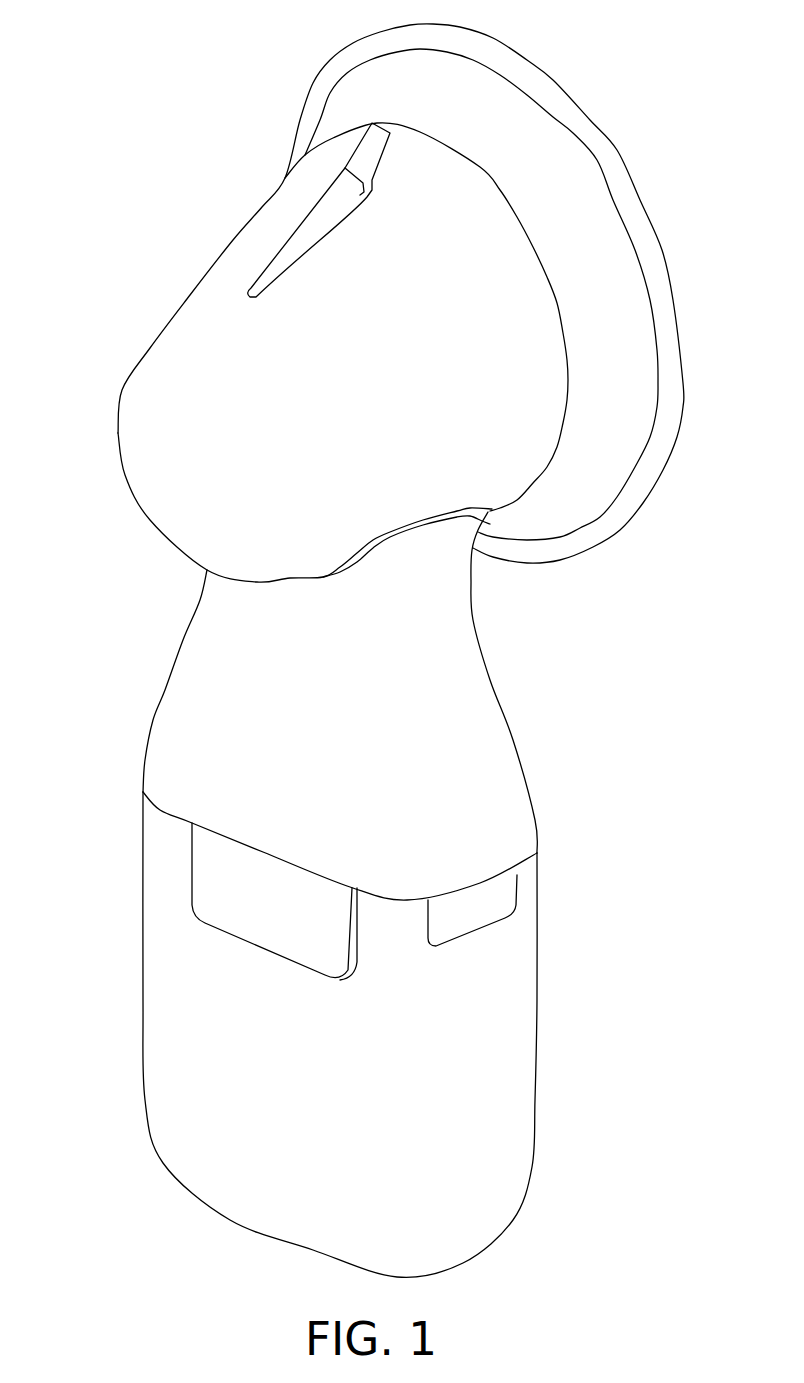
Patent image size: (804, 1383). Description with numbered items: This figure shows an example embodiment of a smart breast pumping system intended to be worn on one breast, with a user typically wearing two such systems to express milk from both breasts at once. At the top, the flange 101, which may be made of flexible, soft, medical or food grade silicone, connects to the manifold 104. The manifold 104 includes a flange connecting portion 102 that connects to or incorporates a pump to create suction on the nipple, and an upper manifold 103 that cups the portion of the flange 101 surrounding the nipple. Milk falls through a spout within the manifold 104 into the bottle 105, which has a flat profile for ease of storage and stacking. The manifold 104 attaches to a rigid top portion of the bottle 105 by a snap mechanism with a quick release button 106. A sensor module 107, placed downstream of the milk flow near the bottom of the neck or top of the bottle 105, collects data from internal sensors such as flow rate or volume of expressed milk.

The flange 101 is at (352, 62).
The flange connecting portion 102 is at (262, 255).
The upper manifold 103 is at (247, 407).
The manifold 104 is at (183, 640).
The bottle 105 is at (145, 1077).
The quick release button 106 is at (487, 906).
The sensor module 107 is at (227, 897).